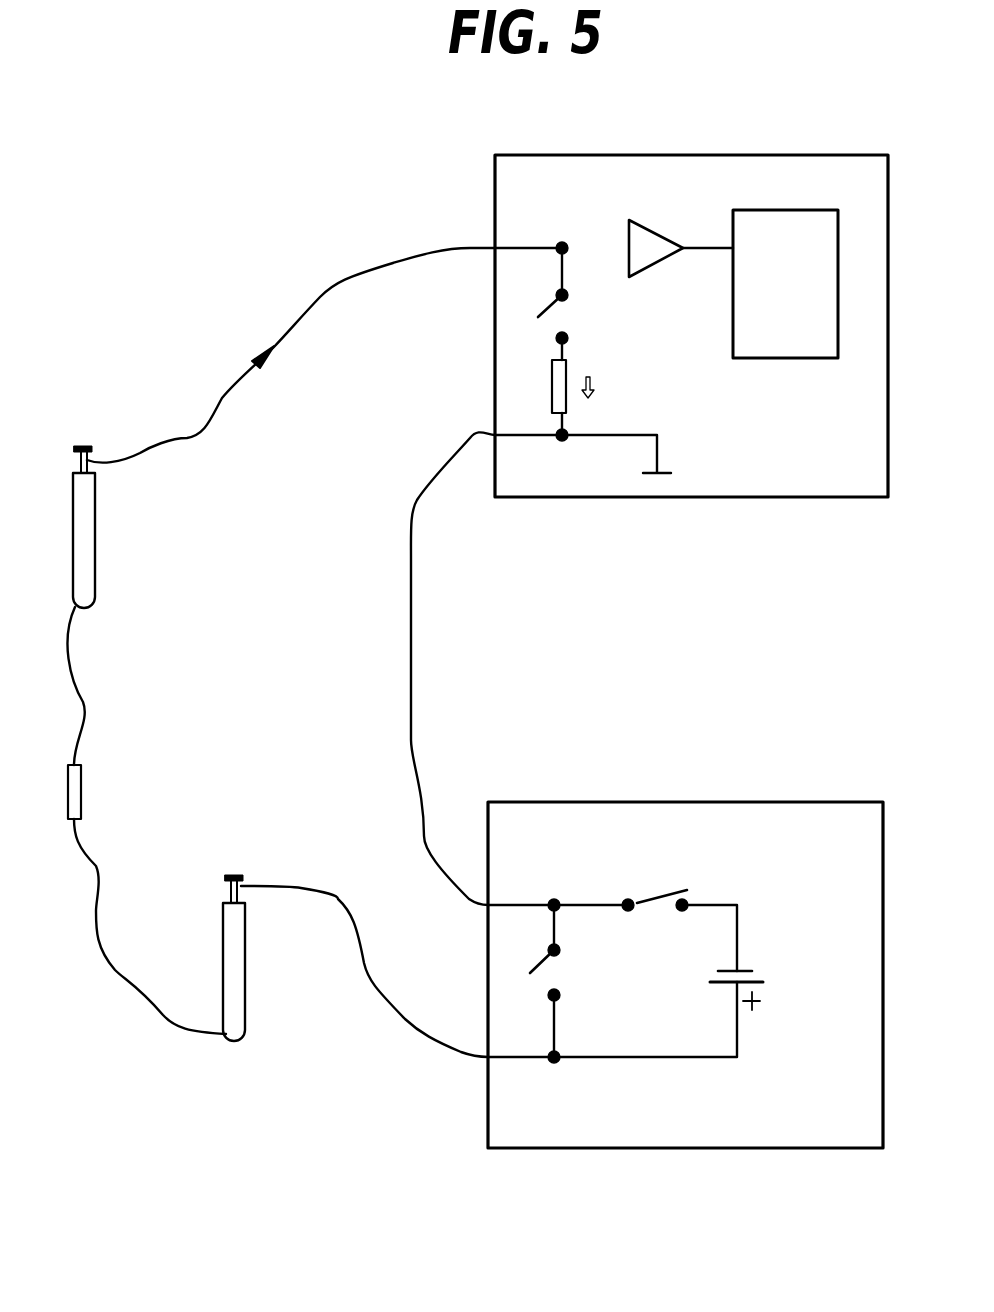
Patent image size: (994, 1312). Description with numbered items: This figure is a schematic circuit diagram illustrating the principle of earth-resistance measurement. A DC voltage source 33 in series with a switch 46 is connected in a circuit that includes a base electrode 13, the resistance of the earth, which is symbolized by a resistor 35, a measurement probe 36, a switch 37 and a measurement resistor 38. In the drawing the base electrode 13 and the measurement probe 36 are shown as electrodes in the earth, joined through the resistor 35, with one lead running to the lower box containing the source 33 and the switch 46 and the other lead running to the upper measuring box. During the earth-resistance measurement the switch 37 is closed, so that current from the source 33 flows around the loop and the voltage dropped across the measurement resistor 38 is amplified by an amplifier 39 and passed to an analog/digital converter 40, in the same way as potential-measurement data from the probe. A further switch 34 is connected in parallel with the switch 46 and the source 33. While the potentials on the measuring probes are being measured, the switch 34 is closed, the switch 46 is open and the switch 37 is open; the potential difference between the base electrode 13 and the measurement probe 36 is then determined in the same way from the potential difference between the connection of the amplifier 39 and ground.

The base electrode 13 is at (247, 985).
The DC voltage source 33 is at (760, 965).
The switch 34 is at (563, 972).
The resistor 35 is at (81, 793).
The measurement probe 36 is at (95, 553).
The switch 37 is at (550, 305).
The measurement resistor 38 is at (552, 400).
The amplifier 39 is at (645, 228).
The analog/digital converter 40 is at (757, 210).
The switch 46 is at (658, 892).